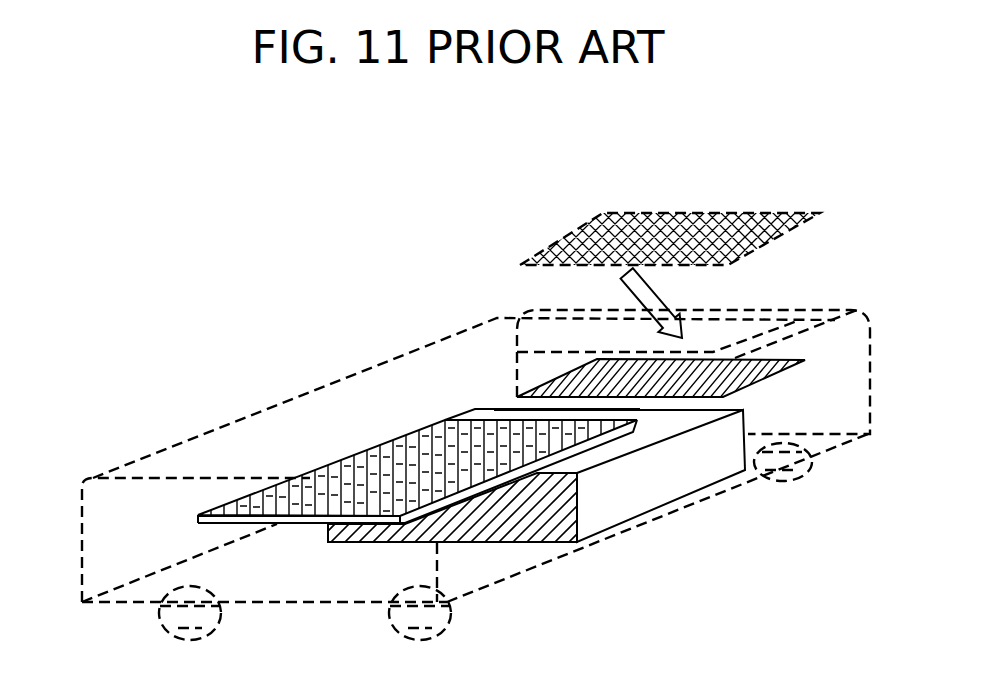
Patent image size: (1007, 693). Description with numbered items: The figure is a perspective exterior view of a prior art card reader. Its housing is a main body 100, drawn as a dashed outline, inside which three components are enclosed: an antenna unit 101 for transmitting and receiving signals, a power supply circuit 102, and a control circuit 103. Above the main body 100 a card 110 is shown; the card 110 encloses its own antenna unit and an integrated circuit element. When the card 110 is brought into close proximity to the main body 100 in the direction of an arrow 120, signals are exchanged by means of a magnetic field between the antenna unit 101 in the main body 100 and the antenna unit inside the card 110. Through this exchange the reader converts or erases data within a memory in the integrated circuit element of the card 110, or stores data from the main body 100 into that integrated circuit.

The main body 100 is at (167, 450).
The antenna unit 101 is at (550, 380).
The power supply circuit 102 is at (658, 487).
The control circuit 103 is at (385, 440).
The card 110 is at (620, 230).
The arrow 120 is at (660, 293).